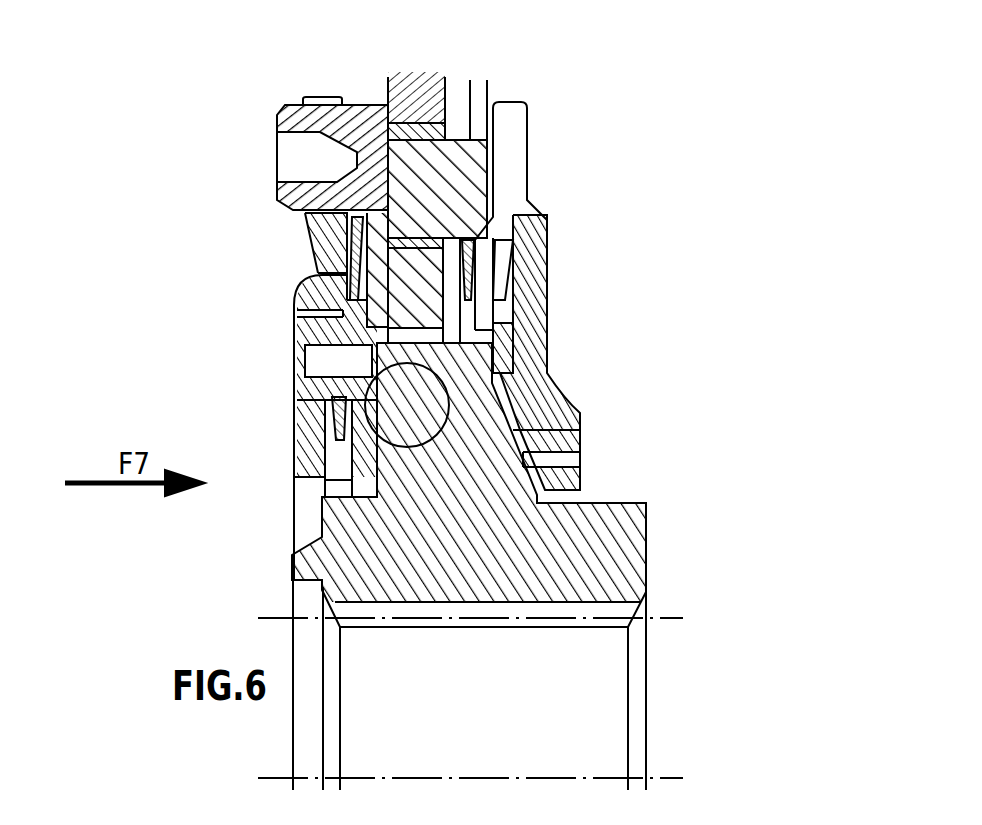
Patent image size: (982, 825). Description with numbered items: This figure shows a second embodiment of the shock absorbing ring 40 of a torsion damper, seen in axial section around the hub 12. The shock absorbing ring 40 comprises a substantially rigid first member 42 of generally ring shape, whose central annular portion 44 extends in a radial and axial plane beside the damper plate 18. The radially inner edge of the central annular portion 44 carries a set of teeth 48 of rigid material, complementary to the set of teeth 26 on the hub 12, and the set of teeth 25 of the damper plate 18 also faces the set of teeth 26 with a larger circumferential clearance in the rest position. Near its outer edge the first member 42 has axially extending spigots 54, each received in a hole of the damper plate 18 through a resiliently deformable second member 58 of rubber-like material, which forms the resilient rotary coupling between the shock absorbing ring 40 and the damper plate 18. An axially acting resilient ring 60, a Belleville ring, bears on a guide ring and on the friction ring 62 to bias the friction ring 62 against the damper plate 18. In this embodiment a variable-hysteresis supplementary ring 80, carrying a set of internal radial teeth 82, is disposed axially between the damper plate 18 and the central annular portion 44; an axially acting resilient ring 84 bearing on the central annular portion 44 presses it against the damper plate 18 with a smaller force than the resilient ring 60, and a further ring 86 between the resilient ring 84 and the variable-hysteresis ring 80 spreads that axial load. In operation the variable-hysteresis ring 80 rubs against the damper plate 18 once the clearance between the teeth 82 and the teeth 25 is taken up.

The hub 12 is at (600, 575).
The damper plate 18 is at (417, 285).
The set of teeth of the damper plate 25 is at (358, 438).
The set of teeth on the hub 26 is at (300, 362).
The shock absorbing ring 40 is at (503, 156).
The first member 42 is at (547, 250).
The central annular portion 44 is at (500, 348).
The set of teeth 48 is at (540, 382).
The spigots 54 is at (442, 173).
The second member 58 is at (407, 133).
The axially acting resilient ring 60 is at (335, 232).
The friction ring 62 is at (372, 103).
The variable-hysteresis supplementary ring 80 is at (472, 266).
The set of internal radial teeth 82 is at (358, 462).
The axially acting resilient ring 84 is at (403, 305).
The further ring 86 is at (300, 312).